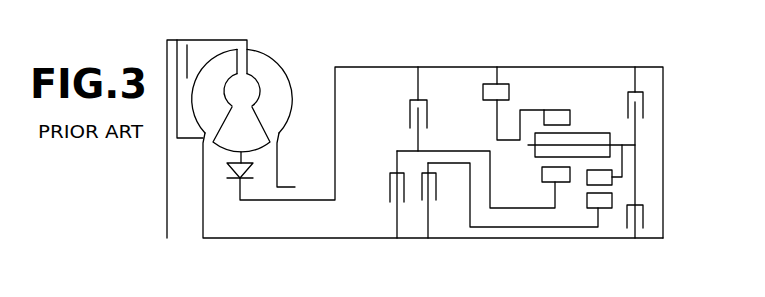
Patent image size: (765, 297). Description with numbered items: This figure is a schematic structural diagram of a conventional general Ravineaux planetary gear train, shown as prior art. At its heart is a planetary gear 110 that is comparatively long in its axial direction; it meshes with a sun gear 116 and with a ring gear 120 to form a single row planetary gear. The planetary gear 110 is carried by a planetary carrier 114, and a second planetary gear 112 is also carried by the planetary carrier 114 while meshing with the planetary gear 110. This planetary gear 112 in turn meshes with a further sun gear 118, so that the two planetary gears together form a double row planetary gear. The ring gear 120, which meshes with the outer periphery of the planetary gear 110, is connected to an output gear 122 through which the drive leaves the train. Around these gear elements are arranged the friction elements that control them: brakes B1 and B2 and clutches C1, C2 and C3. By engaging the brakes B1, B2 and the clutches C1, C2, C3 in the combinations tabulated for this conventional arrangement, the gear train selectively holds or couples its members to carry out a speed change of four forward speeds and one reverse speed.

The planetary gear 110 is at (592, 133).
The planetary gear 112 is at (612, 182).
The planetary carrier 114 is at (633, 164).
The sun gear 116 is at (542, 173).
The sun gear 118 is at (612, 199).
The ring gear 120 is at (570, 118).
The output gear 122 is at (483, 89).
The brake B1 is at (417, 97).
The brake B2 is at (635, 82).
The clutch C1 is at (383, 194).
The clutch C2 is at (443, 200).
The clutch C3 is at (643, 231).